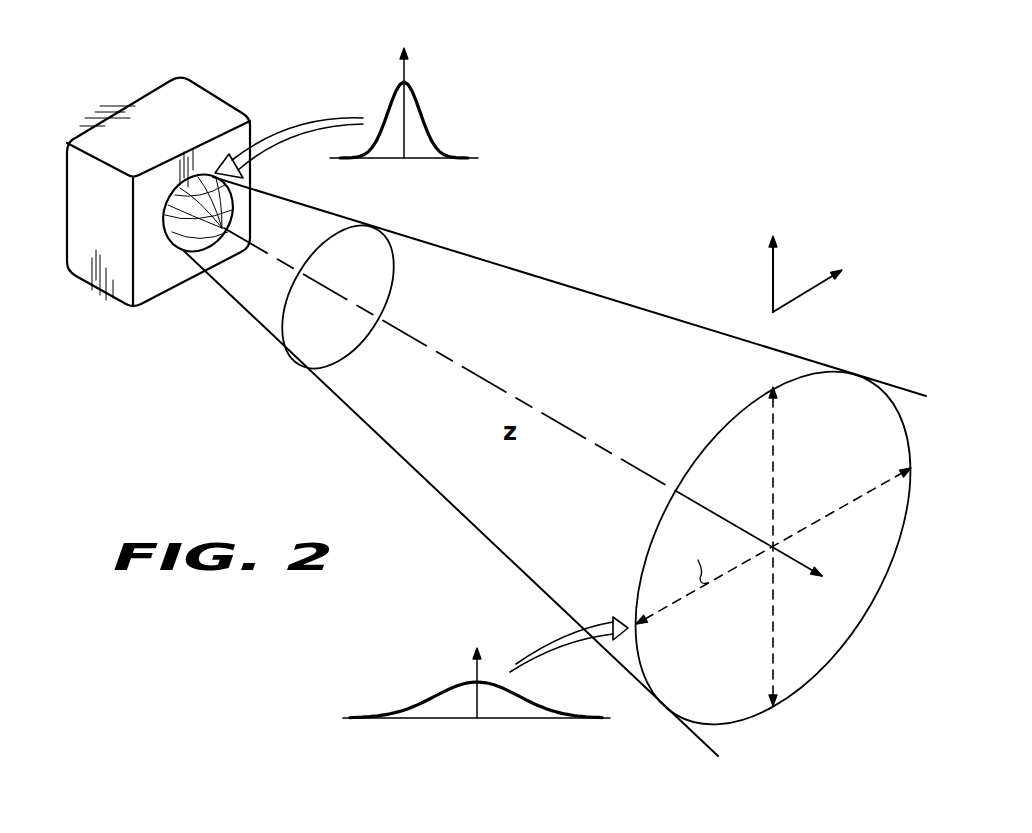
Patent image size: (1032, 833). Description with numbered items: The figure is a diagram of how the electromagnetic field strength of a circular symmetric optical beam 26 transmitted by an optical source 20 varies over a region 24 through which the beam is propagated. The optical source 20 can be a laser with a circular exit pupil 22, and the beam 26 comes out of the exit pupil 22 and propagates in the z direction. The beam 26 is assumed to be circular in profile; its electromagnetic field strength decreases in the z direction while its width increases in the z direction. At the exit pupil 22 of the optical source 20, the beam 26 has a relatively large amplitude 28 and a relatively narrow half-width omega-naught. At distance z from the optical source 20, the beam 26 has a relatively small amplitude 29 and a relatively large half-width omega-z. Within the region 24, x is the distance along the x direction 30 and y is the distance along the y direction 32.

The optical source 20 is at (141, 97).
The circular exit pupil 22 is at (168, 246).
The region 24 is at (748, 716).
The circular symmetric optical beam 26 is at (340, 364).
The relatively large amplitude 28 is at (428, 120).
The relatively small amplitude 29 is at (420, 697).
The x direction 30 is at (810, 296).
The y direction 32 is at (770, 272).